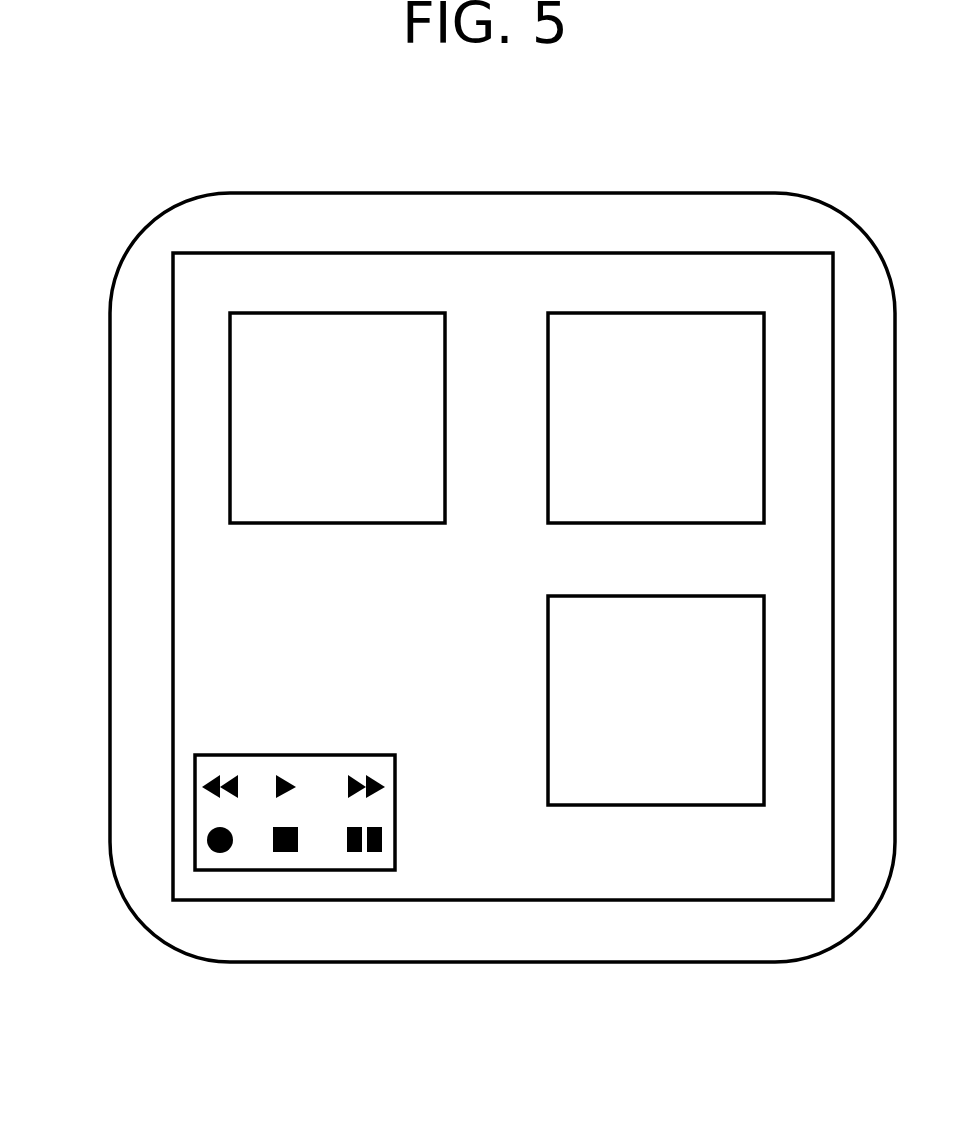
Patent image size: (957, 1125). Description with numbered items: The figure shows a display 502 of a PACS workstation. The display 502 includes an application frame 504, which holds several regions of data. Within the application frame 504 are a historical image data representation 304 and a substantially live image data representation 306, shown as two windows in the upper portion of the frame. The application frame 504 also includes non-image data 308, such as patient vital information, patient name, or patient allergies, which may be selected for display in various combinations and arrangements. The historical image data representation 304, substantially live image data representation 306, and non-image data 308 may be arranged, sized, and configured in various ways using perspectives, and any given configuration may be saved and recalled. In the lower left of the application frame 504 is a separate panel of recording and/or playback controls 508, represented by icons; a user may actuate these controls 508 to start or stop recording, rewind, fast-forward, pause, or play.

The display 502 is at (168, 232).
The application frame 504 is at (202, 670).
The historical image data representation 304 is at (360, 507).
The substantially live image data representation 306 is at (592, 368).
The non-image data 308 is at (575, 645).
The recording and/or playback controls 508 is at (293, 760).